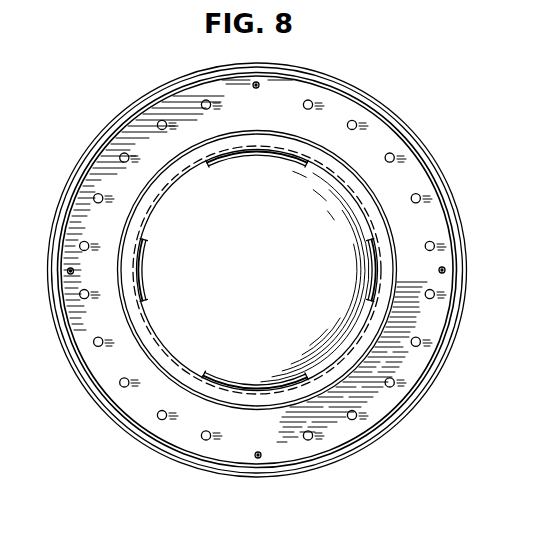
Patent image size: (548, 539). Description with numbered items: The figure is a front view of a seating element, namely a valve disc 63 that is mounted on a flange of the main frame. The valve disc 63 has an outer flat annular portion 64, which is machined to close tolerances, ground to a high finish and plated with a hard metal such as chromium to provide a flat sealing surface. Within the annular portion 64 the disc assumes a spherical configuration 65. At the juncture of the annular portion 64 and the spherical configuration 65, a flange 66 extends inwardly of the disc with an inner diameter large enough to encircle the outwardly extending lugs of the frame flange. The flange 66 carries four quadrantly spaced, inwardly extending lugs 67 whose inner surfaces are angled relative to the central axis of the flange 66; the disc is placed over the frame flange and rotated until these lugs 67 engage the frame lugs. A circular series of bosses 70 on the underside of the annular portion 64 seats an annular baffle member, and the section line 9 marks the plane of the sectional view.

The section line 9- 9 is at (257, 40).
The valve disc 63 is at (119, 119).
The outer flat annular portion 64 is at (370, 140).
The spherical configuration 65 is at (262, 256).
The flange 66 is at (392, 322).
The lugs 67 is at (270, 156).
The bosses 70 is at (203, 109).